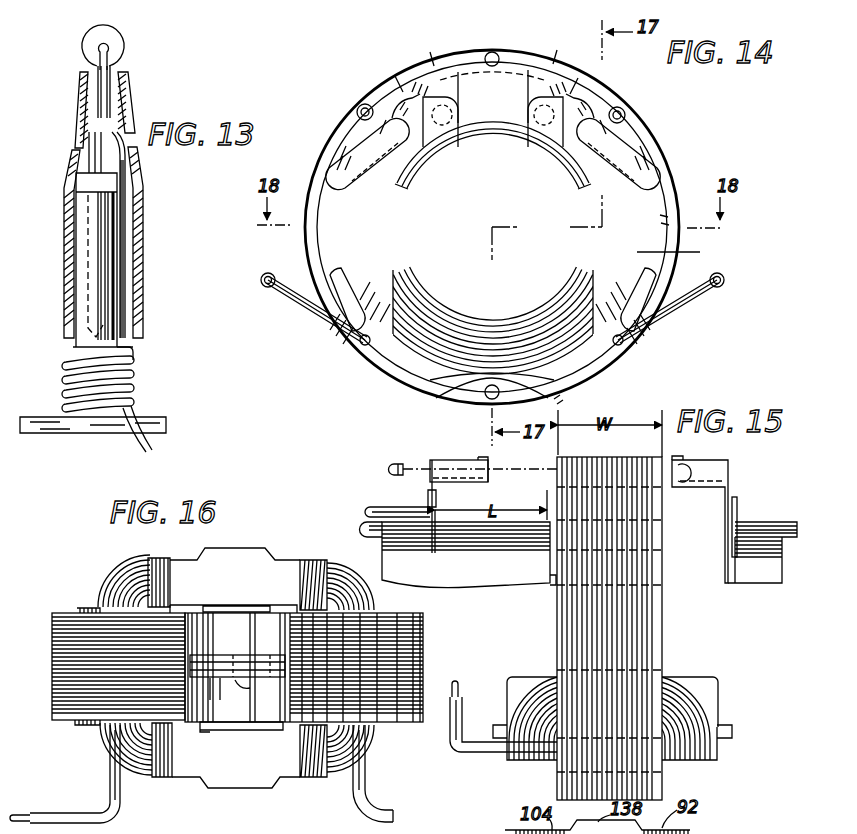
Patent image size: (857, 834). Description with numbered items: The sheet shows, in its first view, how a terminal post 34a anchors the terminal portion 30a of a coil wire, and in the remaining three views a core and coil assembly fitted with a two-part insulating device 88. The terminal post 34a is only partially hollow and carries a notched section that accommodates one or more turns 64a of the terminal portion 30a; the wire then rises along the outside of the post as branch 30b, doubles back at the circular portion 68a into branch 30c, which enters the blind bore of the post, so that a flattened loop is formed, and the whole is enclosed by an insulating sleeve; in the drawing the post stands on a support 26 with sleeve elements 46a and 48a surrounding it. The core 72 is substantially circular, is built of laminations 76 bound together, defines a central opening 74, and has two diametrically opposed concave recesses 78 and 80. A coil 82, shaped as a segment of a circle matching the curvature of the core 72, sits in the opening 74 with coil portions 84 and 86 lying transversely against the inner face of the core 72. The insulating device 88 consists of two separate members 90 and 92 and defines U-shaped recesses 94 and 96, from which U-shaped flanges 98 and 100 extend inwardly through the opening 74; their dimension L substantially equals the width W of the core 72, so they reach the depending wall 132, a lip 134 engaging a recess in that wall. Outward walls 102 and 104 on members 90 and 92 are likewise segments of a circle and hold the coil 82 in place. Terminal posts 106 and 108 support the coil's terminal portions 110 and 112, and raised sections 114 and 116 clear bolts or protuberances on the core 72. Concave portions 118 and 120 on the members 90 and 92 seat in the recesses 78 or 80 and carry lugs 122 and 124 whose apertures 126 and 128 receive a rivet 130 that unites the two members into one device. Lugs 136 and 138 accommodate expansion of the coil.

In FIG. 13, the base plate 26 is at (40, 412).
In FIG. 13, the terminal portion 30a is at (111, 95).
In FIG. 13, the branch 30b is at (125, 245).
In FIG. 13, the branch 30c is at (125, 303).
In FIG. 13, the terminal post 34a is at (82, 313).
In FIG. 13, the inner sleeve 46a is at (88, 182).
In FIG. 13, the outer insulating sleeve 48a is at (144, 200).
In FIG. 13, the turns 64a is at (133, 377).
In FIG. 13, the circular portion 68a is at (123, 27).
In FIG. 14, the core 72 is at (675, 172).
In FIG. 15, the core 72 is at (666, 638).
In FIG. 16, the core 72 is at (416, 728).
In FIG. 14, the central opening 74 is at (682, 251).
In FIG. 15, the laminations 76 is at (657, 607).
In FIG. 16, the laminations 76 is at (426, 655).
In FIG. 14, the concave recess 78 is at (440, 50).
In FIG. 14, the concave recess 80 is at (430, 400).
In FIG. 14, the coil 82 is at (369, 280).
In FIG. 15, the coil 82 is at (700, 762).
In FIG. 16, the coil 82 is at (116, 571).
In FIG. 16, the coil portion 84 is at (100, 603).
In FIG. 15, the coil portion 86 is at (375, 604).
In FIG. 16, the coil portion 86 is at (376, 603).
In FIG. 14, the insulating device 88 is at (390, 77).
In FIG. 16, the insulating device 88 is at (320, 545).
In FIG. 15, the member 90 is at (612, 718).
In FIG. 16, the member 90 is at (297, 777).
In FIG. 15, the member 92 is at (733, 490).
In FIG. 16, the member 92 is at (278, 558).
In FIG. 14, the U-shaped recess 94 is at (390, 166).
In FIG. 14, the U-shaped recess 96 is at (613, 165).
In FIG. 14, the flange 98 is at (415, 108).
In FIG. 14, the flange 100 is at (566, 112).
In FIG. 15, the flange 100 is at (467, 583).
In FIG. 14, the outward wall 102 is at (503, 122).
In FIG. 15, the outward wall 102 is at (383, 545).
In FIG. 16, the outward wall 102 is at (172, 777).
In FIG. 15, the outward wall 104 is at (781, 557).
In FIG. 16, the outward wall 104 is at (185, 538).
In FIG. 14, the terminal post 106 is at (356, 110).
In FIG. 14, the terminal post 108 is at (627, 112).
In FIG. 15, the terminal post 108 is at (377, 507).
In FIG. 14, the terminal portion 110 is at (287, 300).
In FIG. 14, the terminal portion 112 is at (686, 300).
In FIG. 15, the terminal portion 112 is at (462, 757).
In FIG. 16, the terminal portion 112 is at (383, 817).
In FIG. 14, the raised section 114 is at (442, 95).
In FIG. 15, the raised section 114 is at (428, 498).
In FIG. 14, the raised section 116 is at (550, 96).
In FIG. 15, the raised section 116 is at (738, 510).
In FIG. 14, the concave portion 118 is at (512, 50).
In FIG. 15, the concave portion 118 is at (481, 488).
In FIG. 15, the concave portion 120 is at (717, 490).
In FIG. 14, the lug 122 is at (478, 55).
In FIG. 15, the lug 122 is at (488, 460).
In FIG. 16, the lug 122 is at (220, 693).
In FIG. 15, the lug 124 is at (690, 453).
In FIG. 16, the lug 124 is at (213, 654).
In FIG. 15, the aperture 126 is at (490, 473).
In FIG. 15, the aperture 128 is at (687, 488).
In FIG. 14, the rivet 130 is at (496, 52).
In FIG. 15, the rivet 130 is at (412, 445).
In FIG. 16, the rivet 130 is at (237, 683).
In FIG. 15, the depending wall 132 is at (728, 567).
In FIG. 15, the lip 134 is at (553, 590).
In FIG. 15, the lug 136 is at (375, 532).
In FIG. 16, the lug 136 is at (233, 787).
In FIG. 15, the lug 138 is at (795, 527).
In FIG. 16, the lug 138 is at (252, 532).